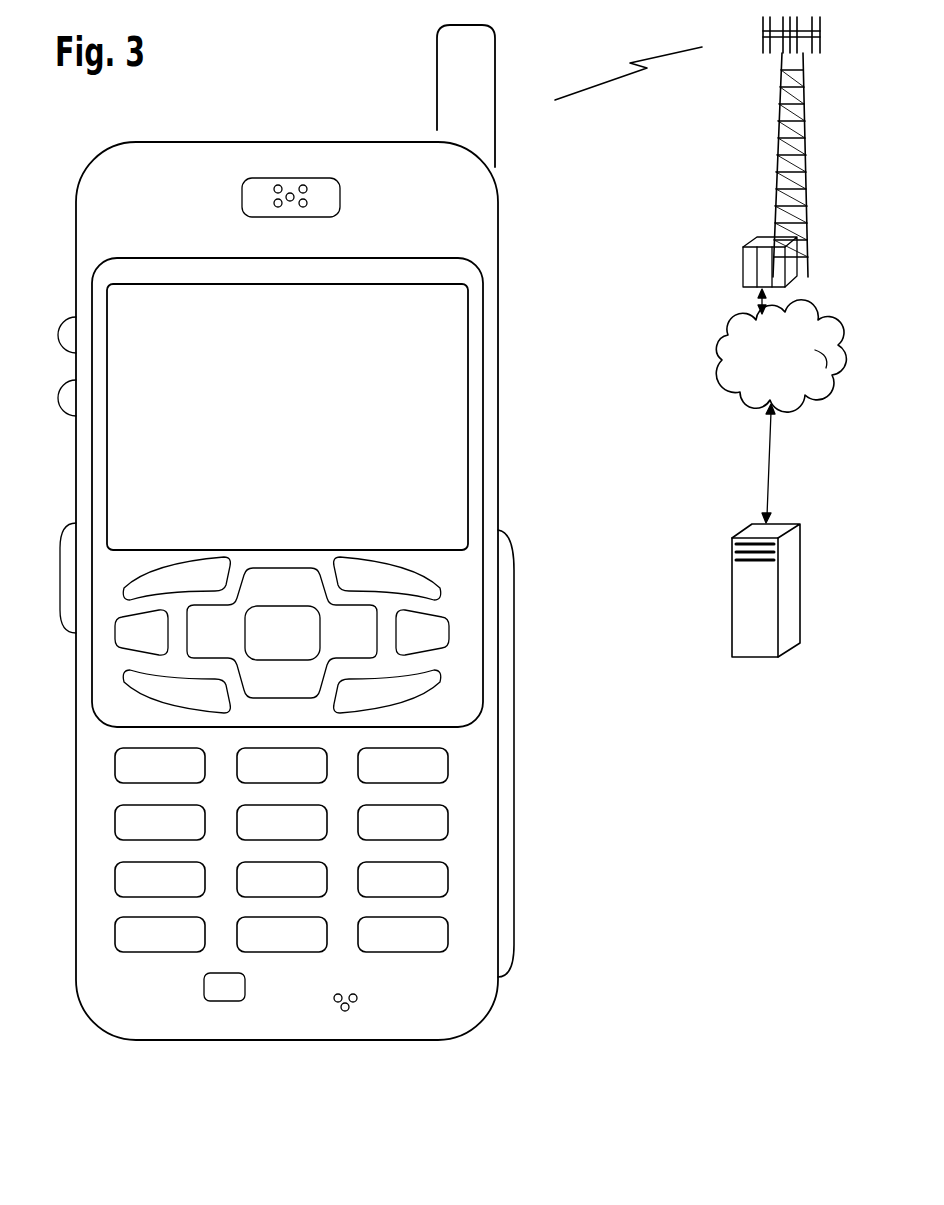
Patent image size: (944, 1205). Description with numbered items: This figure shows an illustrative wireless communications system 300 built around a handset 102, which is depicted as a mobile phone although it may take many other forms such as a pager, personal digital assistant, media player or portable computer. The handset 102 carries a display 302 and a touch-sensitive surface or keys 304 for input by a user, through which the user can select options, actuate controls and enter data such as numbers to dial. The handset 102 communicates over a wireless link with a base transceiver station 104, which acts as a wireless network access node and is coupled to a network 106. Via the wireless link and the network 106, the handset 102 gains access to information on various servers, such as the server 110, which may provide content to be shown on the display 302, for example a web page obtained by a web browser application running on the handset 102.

The wireless communications system 300 is at (250, 43).
The handset 102 is at (142, 1040).
The display 302 is at (472, 336).
The keys 304 is at (514, 752).
The base transceiver station 104 is at (777, 163).
The network 106 is at (719, 368).
The server 110 is at (752, 657).